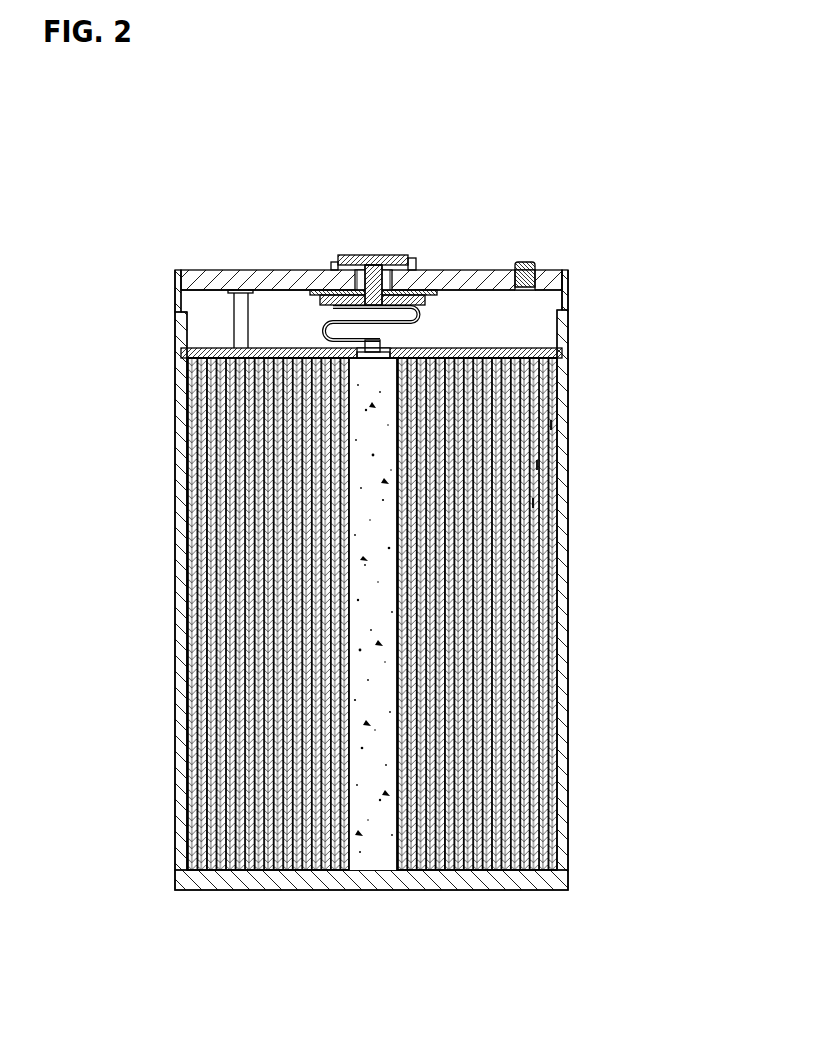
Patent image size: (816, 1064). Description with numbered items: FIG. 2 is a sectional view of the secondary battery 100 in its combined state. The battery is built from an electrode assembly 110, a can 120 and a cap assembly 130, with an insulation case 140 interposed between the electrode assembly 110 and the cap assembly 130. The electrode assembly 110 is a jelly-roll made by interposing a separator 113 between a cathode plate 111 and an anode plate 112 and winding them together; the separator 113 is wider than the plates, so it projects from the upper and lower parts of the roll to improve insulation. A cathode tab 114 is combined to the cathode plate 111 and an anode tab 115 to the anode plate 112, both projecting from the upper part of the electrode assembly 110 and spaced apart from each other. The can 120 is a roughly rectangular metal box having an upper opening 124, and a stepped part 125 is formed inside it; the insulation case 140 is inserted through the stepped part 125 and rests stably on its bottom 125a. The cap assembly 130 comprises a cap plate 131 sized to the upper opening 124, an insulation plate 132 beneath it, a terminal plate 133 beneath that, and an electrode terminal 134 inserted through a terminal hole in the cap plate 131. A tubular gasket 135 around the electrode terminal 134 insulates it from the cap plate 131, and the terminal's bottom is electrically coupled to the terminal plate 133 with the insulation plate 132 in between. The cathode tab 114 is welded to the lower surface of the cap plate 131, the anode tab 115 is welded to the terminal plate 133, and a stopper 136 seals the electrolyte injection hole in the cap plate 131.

The secondary battery 100 is at (102, 162).
The electrode assembly 110 is at (647, 422).
The cathode plate 111 is at (552, 424).
The anode plate 112 is at (534, 503).
The separator 113 is at (538, 465).
The cathode tab 114 is at (243, 322).
The anode tab 115 is at (421, 318).
The can 120 is at (588, 622).
The upper opening 124 is at (200, 303).
The stepped part 125 is at (566, 291).
The bottom of the stepped part 125a is at (566, 346).
The cap assembly 130 is at (474, 238).
The cap plate 131 is at (230, 271).
The insulation plate 132 is at (320, 271).
The terminal plate 133 is at (313, 302).
The electrode terminal 134 is at (372, 255).
The gasket 135 is at (413, 257).
The stopper 136 is at (525, 261).
The insulation case 140 is at (180, 353).